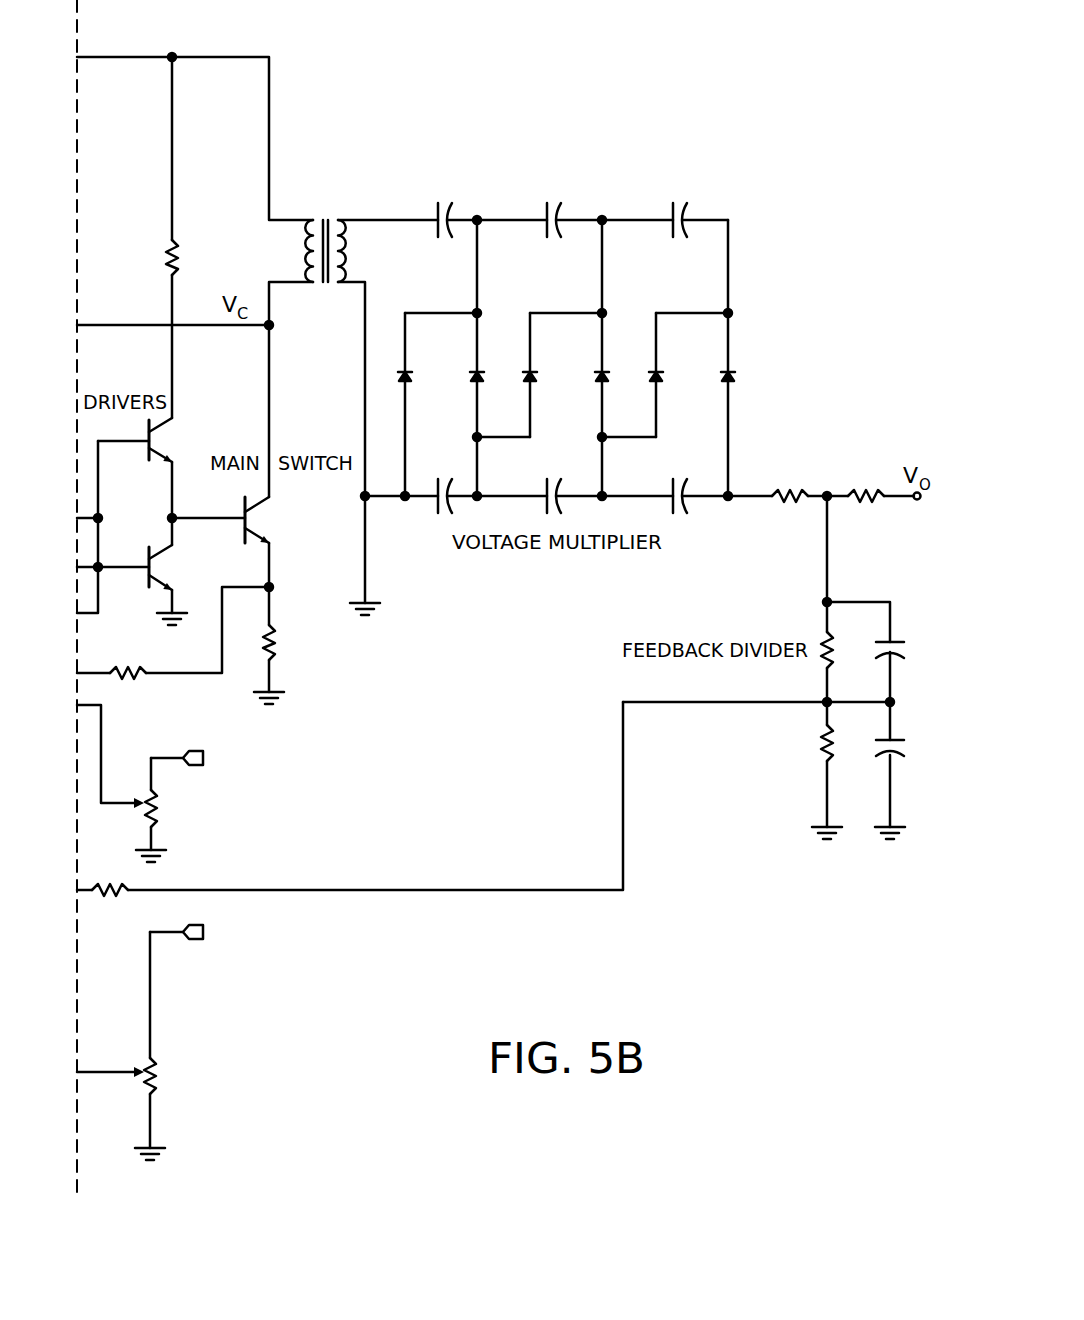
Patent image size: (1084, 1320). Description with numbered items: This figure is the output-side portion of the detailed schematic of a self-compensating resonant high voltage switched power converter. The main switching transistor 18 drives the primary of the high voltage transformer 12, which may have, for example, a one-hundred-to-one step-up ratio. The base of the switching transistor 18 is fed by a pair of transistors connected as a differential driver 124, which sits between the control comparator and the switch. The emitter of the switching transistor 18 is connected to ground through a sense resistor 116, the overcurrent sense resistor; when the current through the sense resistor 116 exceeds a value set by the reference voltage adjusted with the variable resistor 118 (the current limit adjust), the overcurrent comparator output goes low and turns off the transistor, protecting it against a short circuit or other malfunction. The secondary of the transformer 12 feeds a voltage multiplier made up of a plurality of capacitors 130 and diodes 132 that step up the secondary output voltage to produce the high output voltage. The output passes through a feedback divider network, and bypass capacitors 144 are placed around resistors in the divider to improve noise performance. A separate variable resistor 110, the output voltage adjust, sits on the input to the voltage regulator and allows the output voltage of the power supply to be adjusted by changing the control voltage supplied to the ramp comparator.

The high voltage transformer 12 is at (338, 158).
The capacitors 130 is at (672, 206).
The diodes 132 is at (718, 378).
The differential driver 124 is at (183, 496).
The switching transistor 18 is at (274, 530).
The sense resistor 116 is at (280, 638).
The bypass capacitors 144 is at (902, 647).
The variable resistor 118 is at (155, 797).
The variable resistor 110 is at (153, 1060).